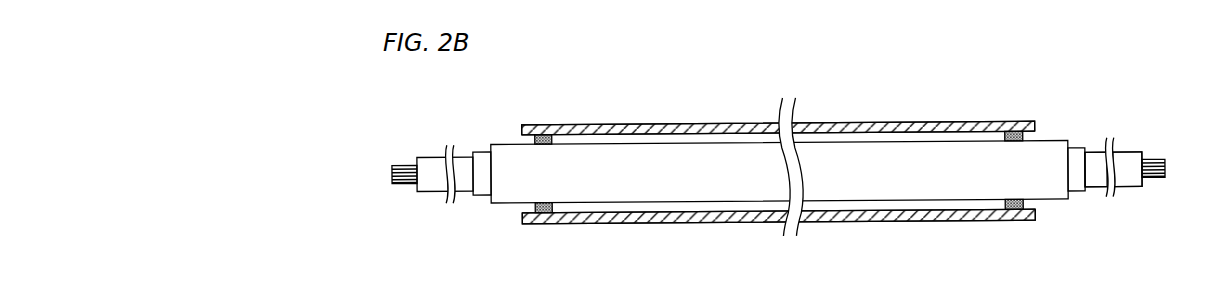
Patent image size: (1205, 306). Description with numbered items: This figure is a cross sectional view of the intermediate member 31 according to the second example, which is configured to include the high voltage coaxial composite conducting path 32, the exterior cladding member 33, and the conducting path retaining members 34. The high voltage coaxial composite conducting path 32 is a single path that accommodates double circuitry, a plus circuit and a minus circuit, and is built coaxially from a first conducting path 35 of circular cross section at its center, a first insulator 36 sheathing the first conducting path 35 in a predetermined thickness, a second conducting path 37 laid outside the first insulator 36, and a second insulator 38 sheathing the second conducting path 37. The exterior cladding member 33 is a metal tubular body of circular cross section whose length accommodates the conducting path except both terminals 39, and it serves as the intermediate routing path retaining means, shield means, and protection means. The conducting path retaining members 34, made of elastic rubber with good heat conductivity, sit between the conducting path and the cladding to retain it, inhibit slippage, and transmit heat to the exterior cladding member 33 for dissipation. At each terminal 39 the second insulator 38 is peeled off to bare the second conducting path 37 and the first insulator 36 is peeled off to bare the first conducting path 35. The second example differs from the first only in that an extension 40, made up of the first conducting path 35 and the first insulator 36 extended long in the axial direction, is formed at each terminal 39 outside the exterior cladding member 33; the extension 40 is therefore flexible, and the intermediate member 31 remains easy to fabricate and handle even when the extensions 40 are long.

The intermediate member 31 is at (529, 118).
The high voltage coaxial composite conducting path 32 is at (1047, 137).
The exterior cladding member 33 is at (679, 122).
The conducting path retaining member 34 is at (553, 207).
The first conducting path 35 is at (1153, 160).
The first insulator 36 is at (1125, 178).
The second conducting path 37 is at (1080, 173).
The second insulator 38 is at (1050, 192).
The terminal 39 is at (456, 204).
The extension 40 is at (430, 157).